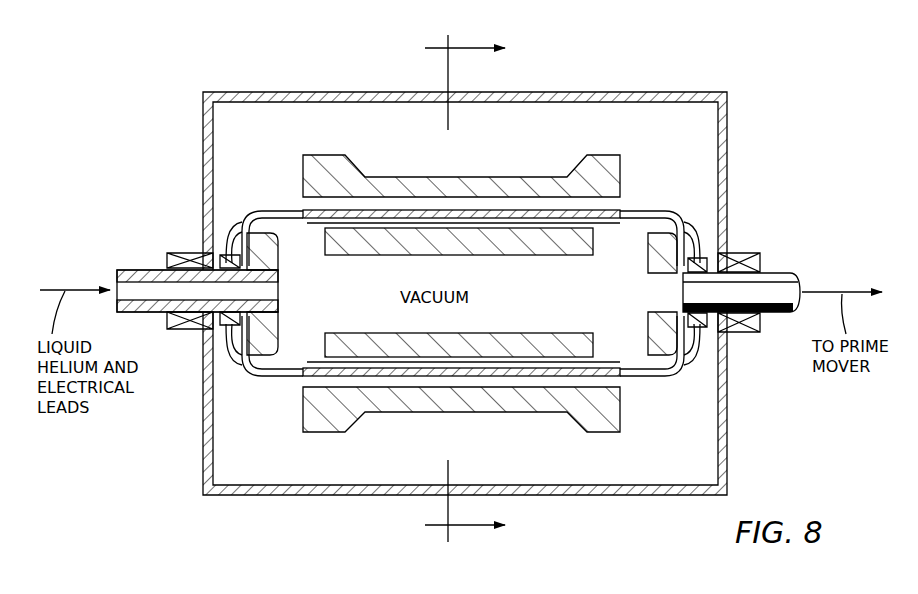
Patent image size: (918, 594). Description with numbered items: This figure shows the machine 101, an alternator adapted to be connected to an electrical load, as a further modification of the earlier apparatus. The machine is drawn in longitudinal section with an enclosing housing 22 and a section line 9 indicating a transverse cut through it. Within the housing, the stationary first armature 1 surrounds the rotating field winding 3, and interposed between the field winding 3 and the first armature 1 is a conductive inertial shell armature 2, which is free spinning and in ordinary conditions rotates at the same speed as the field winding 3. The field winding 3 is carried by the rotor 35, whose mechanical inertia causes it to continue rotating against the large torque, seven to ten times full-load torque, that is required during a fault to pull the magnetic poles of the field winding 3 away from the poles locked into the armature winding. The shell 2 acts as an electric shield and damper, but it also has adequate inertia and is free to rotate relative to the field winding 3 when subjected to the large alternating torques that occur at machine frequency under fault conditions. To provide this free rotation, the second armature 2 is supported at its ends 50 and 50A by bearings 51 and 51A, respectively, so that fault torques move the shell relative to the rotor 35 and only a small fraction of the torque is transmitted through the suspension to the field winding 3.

The housing wall 22 is at (649, 91).
The first armature 1 is at (621, 163).
The conductive inertial shell armature 2 is at (672, 215).
The field winding 3 is at (548, 240).
The rotor 35 is at (272, 318).
The end of the second armature 50 is at (233, 245).
The end of the second armature 50A is at (703, 252).
The bearing 51 is at (225, 330).
The bearing 51A is at (690, 330).
The section line 9- 9 is at (465, 289).
The machine 101 is at (297, 526).